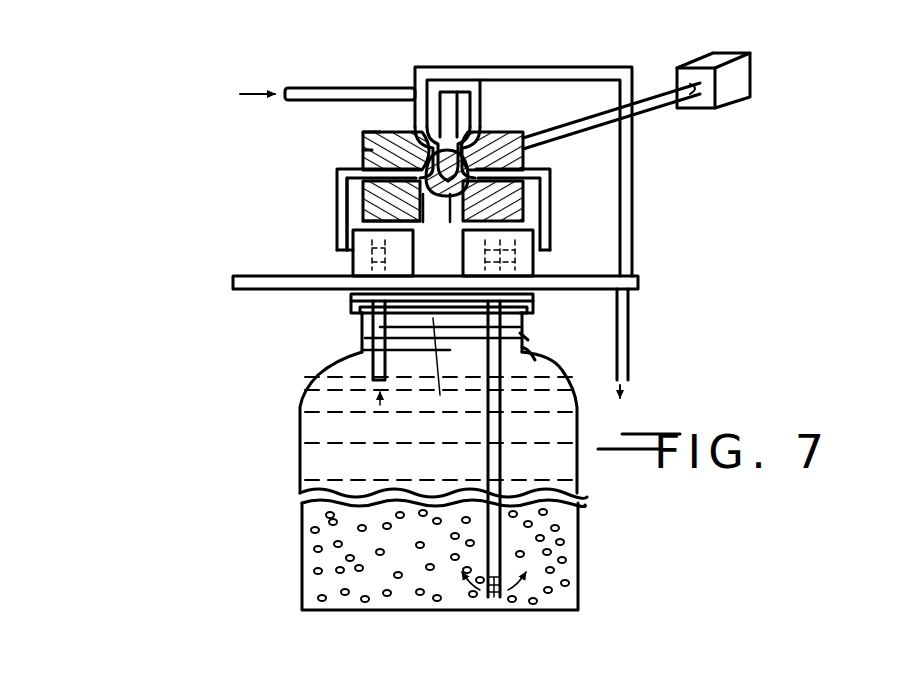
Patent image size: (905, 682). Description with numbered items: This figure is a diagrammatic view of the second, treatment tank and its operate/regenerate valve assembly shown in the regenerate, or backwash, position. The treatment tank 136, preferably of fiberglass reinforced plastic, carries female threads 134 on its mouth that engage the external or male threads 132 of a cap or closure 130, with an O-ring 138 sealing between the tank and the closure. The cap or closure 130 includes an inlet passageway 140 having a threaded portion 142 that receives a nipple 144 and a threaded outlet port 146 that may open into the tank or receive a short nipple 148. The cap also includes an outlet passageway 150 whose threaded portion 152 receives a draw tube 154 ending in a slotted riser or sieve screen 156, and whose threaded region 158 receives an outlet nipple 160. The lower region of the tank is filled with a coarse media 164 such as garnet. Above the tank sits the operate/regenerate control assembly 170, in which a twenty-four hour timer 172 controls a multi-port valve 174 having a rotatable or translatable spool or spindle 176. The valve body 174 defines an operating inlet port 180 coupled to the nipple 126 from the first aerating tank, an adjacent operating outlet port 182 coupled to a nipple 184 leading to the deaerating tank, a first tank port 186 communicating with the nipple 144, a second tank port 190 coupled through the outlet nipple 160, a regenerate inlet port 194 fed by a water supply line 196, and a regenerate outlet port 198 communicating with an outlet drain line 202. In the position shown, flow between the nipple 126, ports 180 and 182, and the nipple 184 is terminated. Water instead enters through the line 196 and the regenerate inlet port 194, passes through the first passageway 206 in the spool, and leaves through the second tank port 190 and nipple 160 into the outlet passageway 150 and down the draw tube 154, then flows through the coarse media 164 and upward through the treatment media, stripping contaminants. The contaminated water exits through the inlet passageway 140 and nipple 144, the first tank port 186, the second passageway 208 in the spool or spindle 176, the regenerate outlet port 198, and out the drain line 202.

The operate/regenerate control assembly 170 is at (183, 66).
The twenty-four hour timer 172 is at (743, 53).
The multi-port valve 174 is at (362, 146).
The valve spool or spindle 176 is at (447, 66).
The operating inlet port 180 is at (362, 197).
The operating outlet port 182 is at (528, 206).
The nipple 184 is at (640, 283).
The first tank port 186 is at (362, 155).
The second tank port 190 is at (548, 162).
The regenerate inlet port 194 is at (478, 67).
The line 196 is at (325, 88).
The regenerate outlet port 198 is at (400, 130).
The outlet drain line 202 is at (588, 67).
The first passageway 206 is at (486, 135).
The second passageway 208 is at (398, 135).
The nipple 126 is at (243, 276).
The cap or closure 130 is at (350, 298).
The external or male threads 132 is at (440, 395).
The female threads 134 is at (522, 347).
The treatment tank 136 is at (302, 468).
The O-ring 138 is at (357, 315).
The inlet passageway 140 is at (350, 264).
The threaded portion 142 is at (358, 216).
The nipple 144 is at (345, 188).
The threaded outlet port 146 is at (350, 327).
The short nipple 148 is at (327, 360).
The outlet passageway 150 is at (535, 260).
The threaded portion 152 is at (530, 333).
The draw tube 154 is at (507, 460).
The slotted riser or sieve screen 156 is at (498, 603).
The threaded region 158 is at (535, 236).
The outlet nipple 160 is at (552, 185).
The coarse media 164 is at (322, 560).